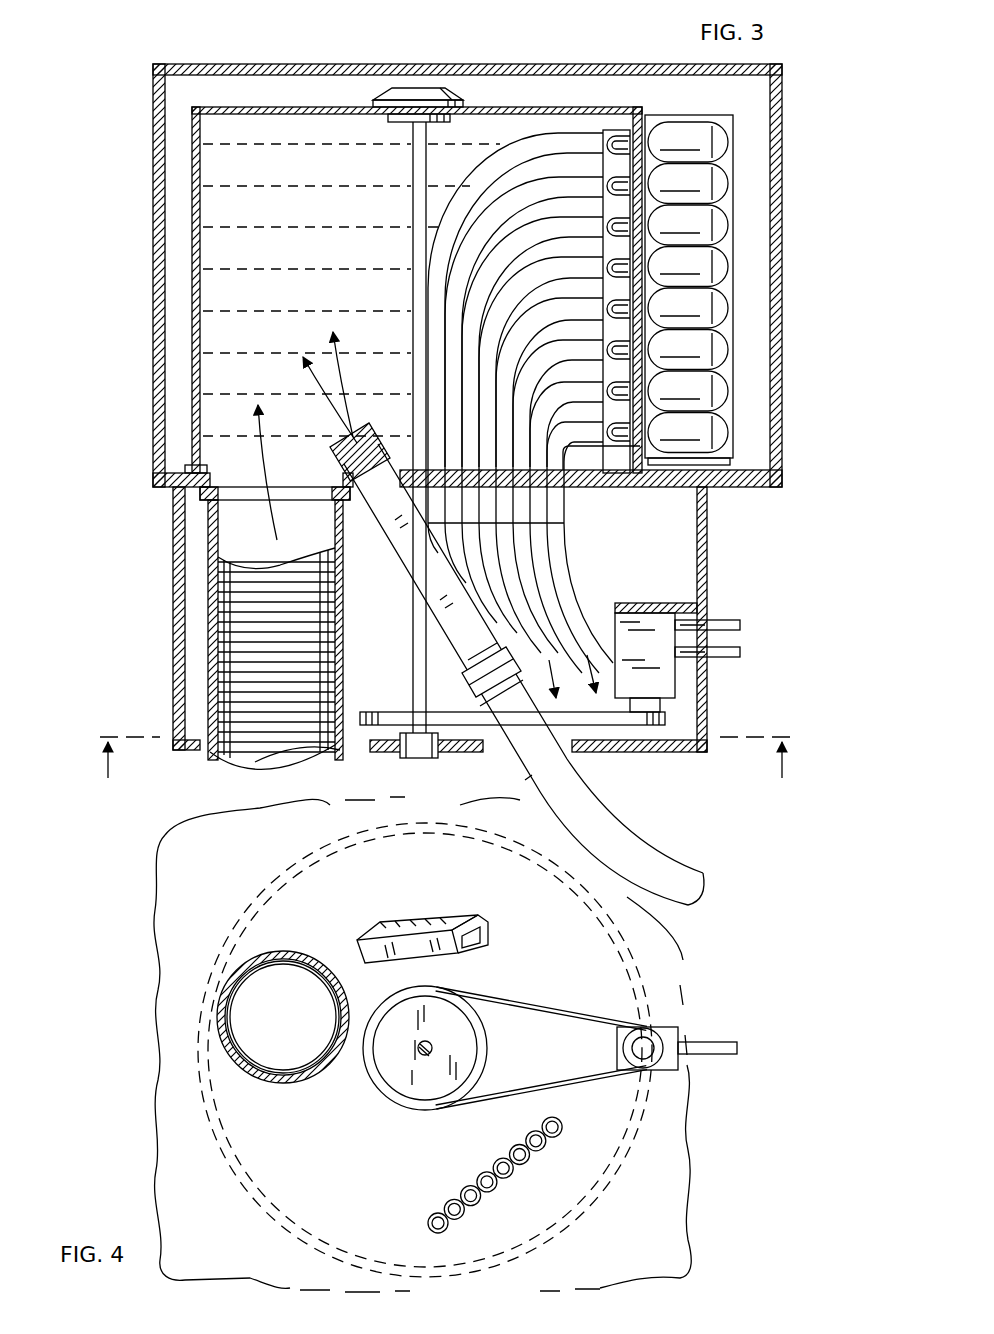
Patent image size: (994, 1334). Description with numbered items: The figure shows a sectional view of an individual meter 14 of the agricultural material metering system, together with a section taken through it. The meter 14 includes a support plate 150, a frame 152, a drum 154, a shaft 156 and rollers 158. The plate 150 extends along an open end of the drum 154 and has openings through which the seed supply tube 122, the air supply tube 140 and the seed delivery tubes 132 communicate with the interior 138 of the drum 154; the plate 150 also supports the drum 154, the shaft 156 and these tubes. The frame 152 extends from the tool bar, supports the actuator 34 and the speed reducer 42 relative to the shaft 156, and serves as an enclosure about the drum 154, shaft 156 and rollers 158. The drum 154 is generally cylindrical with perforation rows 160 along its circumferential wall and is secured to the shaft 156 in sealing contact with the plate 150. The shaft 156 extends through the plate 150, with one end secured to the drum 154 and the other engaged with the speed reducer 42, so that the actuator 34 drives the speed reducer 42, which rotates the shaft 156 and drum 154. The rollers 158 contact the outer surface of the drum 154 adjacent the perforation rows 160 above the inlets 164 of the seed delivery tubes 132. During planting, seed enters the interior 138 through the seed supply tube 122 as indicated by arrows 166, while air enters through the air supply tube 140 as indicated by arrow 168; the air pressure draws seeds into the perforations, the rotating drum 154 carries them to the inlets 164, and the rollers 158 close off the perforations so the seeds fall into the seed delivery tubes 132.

In FIG. 3, the meter 14 is at (148, 44).
In FIG. 4, the meter 14 is at (102, 858).
In FIG. 3, the actuator 34 is at (667, 676).
In FIG. 4, the actuator 34 is at (655, 1062).
In FIG. 3, the speed reducer 42 is at (625, 728).
In FIG. 4, the speed reducer 42 is at (537, 1003).
In FIG. 3, the seed supply tube 122 is at (608, 790).
In FIG. 4, the seed supply tube 122 is at (426, 922).
In FIG. 3, the seed delivery tubes 132 is at (568, 606).
In FIG. 3, the interior 138 is at (282, 120).
In FIG. 3, the air supply tube 140 is at (218, 646).
In FIG. 4, the air supply tube 140 is at (279, 1085).
In FIG. 3, the support plate 150 is at (588, 487).
In FIG. 4, the support plate 150 is at (158, 943).
In FIG. 3, the frame 152 is at (155, 280).
In FIG. 3, the drum 154 is at (322, 105).
In FIG. 4, the drum 154 is at (263, 889).
In FIG. 3, the shaft 156 is at (420, 92).
In FIG. 4, the shaft 156 is at (413, 1055).
In FIG. 3, the rollers 158 is at (735, 150).
In FIG. 3, the perforation rows 160 is at (225, 144).
In FIG. 3, the inlets 164 is at (590, 180).
In FIG. 3, the arrows 166 is at (330, 400).
In FIG. 3, the arrow 168 is at (275, 481).